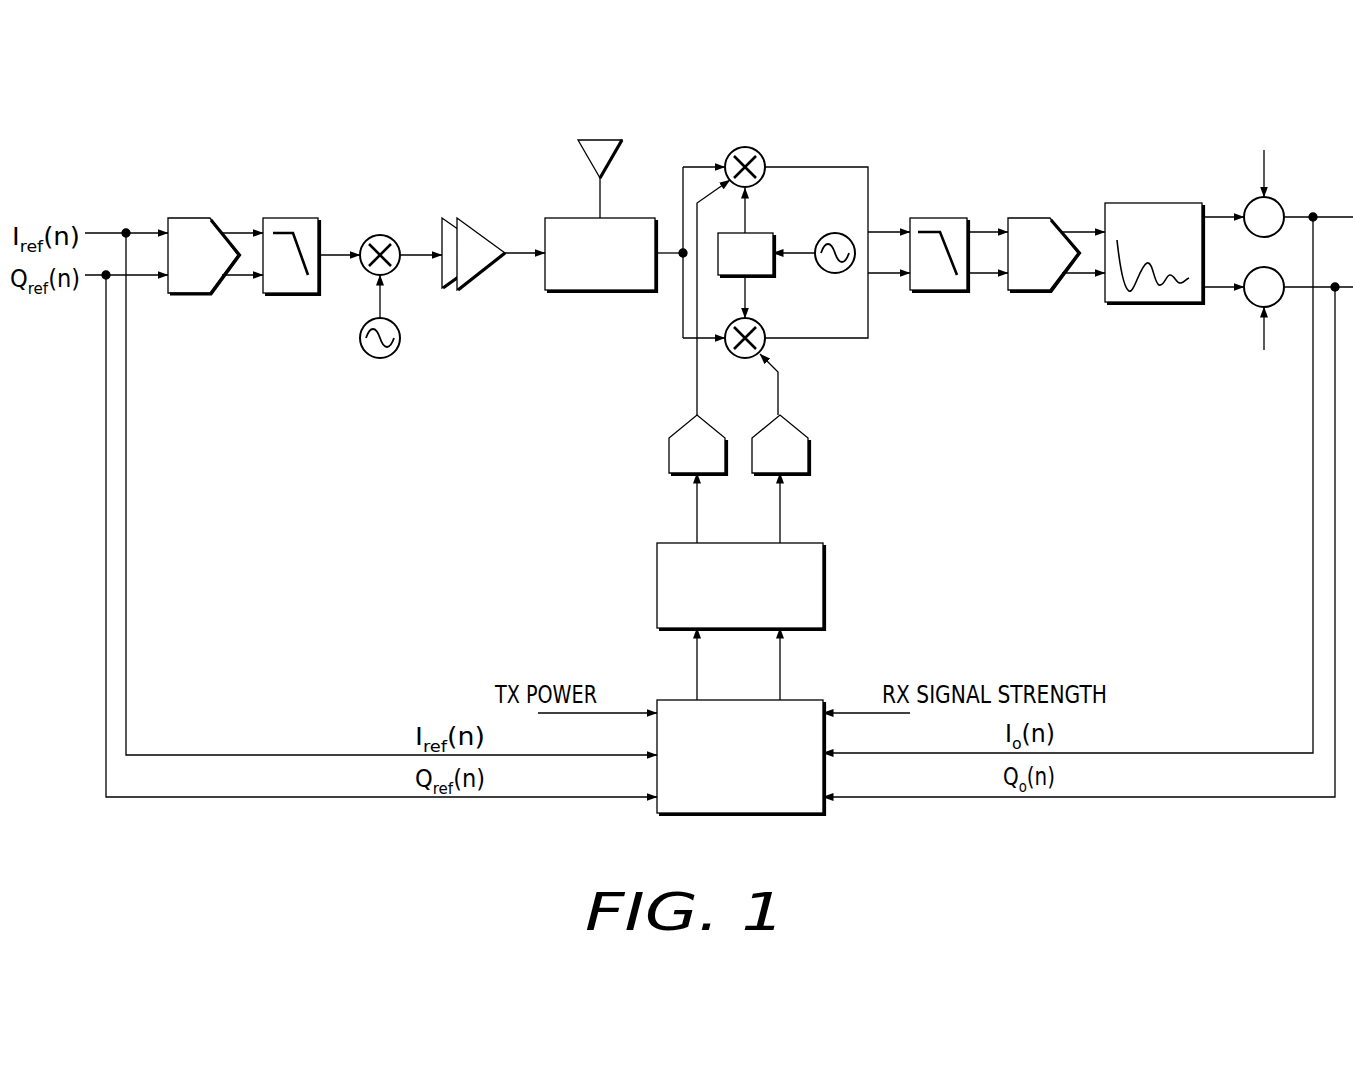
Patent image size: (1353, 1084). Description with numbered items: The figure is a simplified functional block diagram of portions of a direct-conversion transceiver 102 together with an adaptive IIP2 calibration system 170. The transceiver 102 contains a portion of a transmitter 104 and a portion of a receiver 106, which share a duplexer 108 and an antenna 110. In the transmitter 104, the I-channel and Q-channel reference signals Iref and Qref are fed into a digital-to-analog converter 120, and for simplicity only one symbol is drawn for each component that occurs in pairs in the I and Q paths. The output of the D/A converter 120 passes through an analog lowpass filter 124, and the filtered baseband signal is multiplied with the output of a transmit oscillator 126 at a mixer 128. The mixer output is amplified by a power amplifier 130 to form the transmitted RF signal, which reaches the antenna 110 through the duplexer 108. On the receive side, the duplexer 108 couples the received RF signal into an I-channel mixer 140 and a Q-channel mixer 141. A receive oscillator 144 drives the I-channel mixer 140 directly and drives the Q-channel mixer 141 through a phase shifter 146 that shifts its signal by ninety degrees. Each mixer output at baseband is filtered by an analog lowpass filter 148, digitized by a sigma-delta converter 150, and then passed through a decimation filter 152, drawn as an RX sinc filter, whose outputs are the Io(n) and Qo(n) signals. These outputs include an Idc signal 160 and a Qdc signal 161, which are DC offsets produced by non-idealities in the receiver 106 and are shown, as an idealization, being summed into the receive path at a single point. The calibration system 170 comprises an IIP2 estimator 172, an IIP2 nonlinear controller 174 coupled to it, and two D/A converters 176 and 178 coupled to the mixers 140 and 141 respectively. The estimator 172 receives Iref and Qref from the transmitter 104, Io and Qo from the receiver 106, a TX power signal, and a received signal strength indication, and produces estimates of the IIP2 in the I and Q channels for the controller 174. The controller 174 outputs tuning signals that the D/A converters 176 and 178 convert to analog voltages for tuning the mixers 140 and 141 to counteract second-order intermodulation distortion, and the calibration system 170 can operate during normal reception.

The direct-conversion transceiver 102 is at (664, 137).
The transmitter 104 is at (360, 163).
The receiver 106 is at (1076, 149).
The duplexer 108 is at (597, 292).
The antenna 110 is at (586, 158).
The digital-to-analog converter 120 is at (182, 218).
The analog lowpass filter 124 is at (285, 218).
The transmit oscillator 126 is at (360, 340).
The mixer 128 is at (372, 236).
The power amplifier 130 is at (478, 230).
The I-channel mixer 140 is at (760, 152).
The Q-channel mixer 141 is at (760, 323).
The receive oscillator 144 is at (824, 237).
The phase shifter 146 is at (773, 233).
The analog lowpass filter 148 is at (930, 218).
The sigma-delta converter 150 is at (1025, 218).
The decimation filter 152 is at (1148, 203).
The Idc signal 160 is at (1266, 175).
The Qdc signal 161 is at (1262, 340).
The adaptive IIP2 calibration system 170 is at (574, 564).
The IIP2 estimator 172 is at (773, 814).
The IIP2 nonlinear controller 174 is at (823, 578).
The digital-to-analog converter 176 is at (669, 450).
The digital-to-analog converter 178 is at (808, 457).